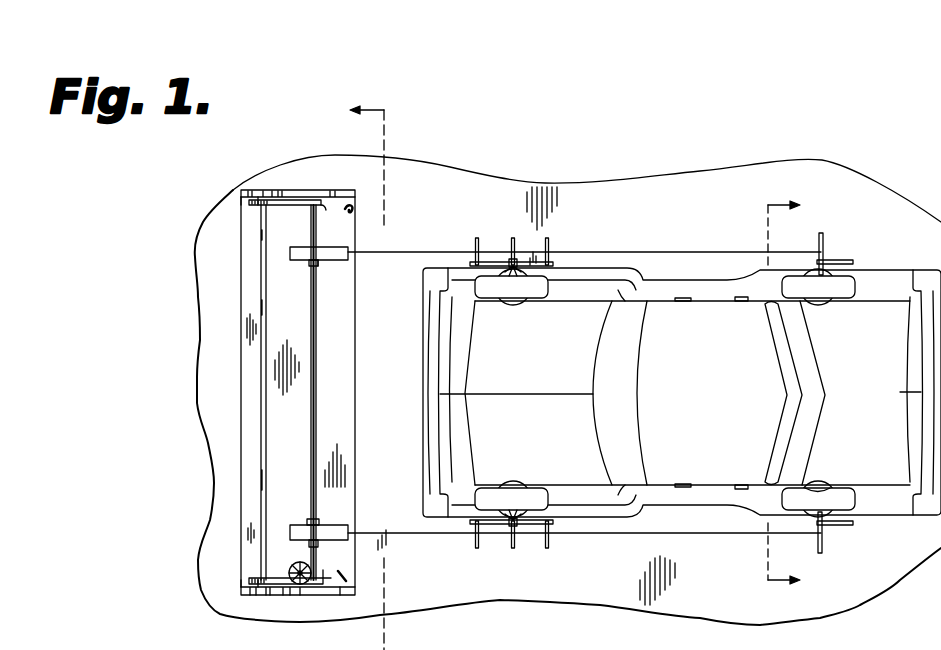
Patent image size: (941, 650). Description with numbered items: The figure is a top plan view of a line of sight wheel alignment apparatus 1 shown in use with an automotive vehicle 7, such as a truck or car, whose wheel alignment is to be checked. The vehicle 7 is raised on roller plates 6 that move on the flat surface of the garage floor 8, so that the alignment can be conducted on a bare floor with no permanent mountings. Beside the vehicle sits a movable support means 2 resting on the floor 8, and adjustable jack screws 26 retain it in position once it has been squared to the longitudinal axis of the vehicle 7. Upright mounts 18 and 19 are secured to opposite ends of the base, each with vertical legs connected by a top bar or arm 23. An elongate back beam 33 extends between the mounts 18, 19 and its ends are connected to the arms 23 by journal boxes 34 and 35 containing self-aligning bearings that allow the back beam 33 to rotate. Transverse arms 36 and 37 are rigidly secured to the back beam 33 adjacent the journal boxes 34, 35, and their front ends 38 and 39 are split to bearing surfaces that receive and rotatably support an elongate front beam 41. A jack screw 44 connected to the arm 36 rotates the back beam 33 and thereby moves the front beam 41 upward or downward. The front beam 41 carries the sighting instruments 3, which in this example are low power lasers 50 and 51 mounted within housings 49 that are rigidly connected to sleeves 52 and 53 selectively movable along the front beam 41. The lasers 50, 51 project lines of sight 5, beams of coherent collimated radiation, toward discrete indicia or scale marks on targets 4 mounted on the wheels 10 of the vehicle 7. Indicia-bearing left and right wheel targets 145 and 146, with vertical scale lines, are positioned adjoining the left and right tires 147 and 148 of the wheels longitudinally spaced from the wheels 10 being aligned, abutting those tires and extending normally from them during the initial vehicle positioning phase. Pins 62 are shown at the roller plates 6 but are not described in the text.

The line of sight wheel alignment apparatus 1 is at (184, 270).
The movable support means 2 is at (241, 490).
The sighting instruments 3 is at (335, 526).
The targets 4 is at (347, 373).
The lines of sight 5 is at (443, 229).
The roller plates 6 is at (522, 304).
The vehicle 7 is at (716, 403).
The garage floor 8 is at (885, 185).
The wheels 10 is at (533, 490).
The upright mount 18 is at (289, 592).
The upright mount 19 is at (316, 190).
The top bar or arm 23 is at (341, 592).
The adjustable jack screws 26 is at (351, 208).
The back beam 33 is at (262, 402).
The journal box 34 is at (262, 595).
The journal box 35 is at (262, 190).
The transverse arm 36 is at (262, 576).
The transverse arm 37 is at (283, 206).
The front end 38 is at (325, 576).
The front end 39 is at (324, 206).
The front beam 41 is at (316, 402).
The jack screw 44 is at (297, 563).
The housings 49 is at (321, 263).
The laser 50 is at (349, 530).
The laser 51 is at (349, 258).
The sleeve 52 is at (308, 520).
The sleeve 53 is at (311, 264).
The wheel pins 62 is at (553, 524).
The left wheel target 145 is at (823, 538).
The right wheel target 146 is at (826, 246).
The left tire 147 is at (838, 494).
The right tire 148 is at (841, 298).